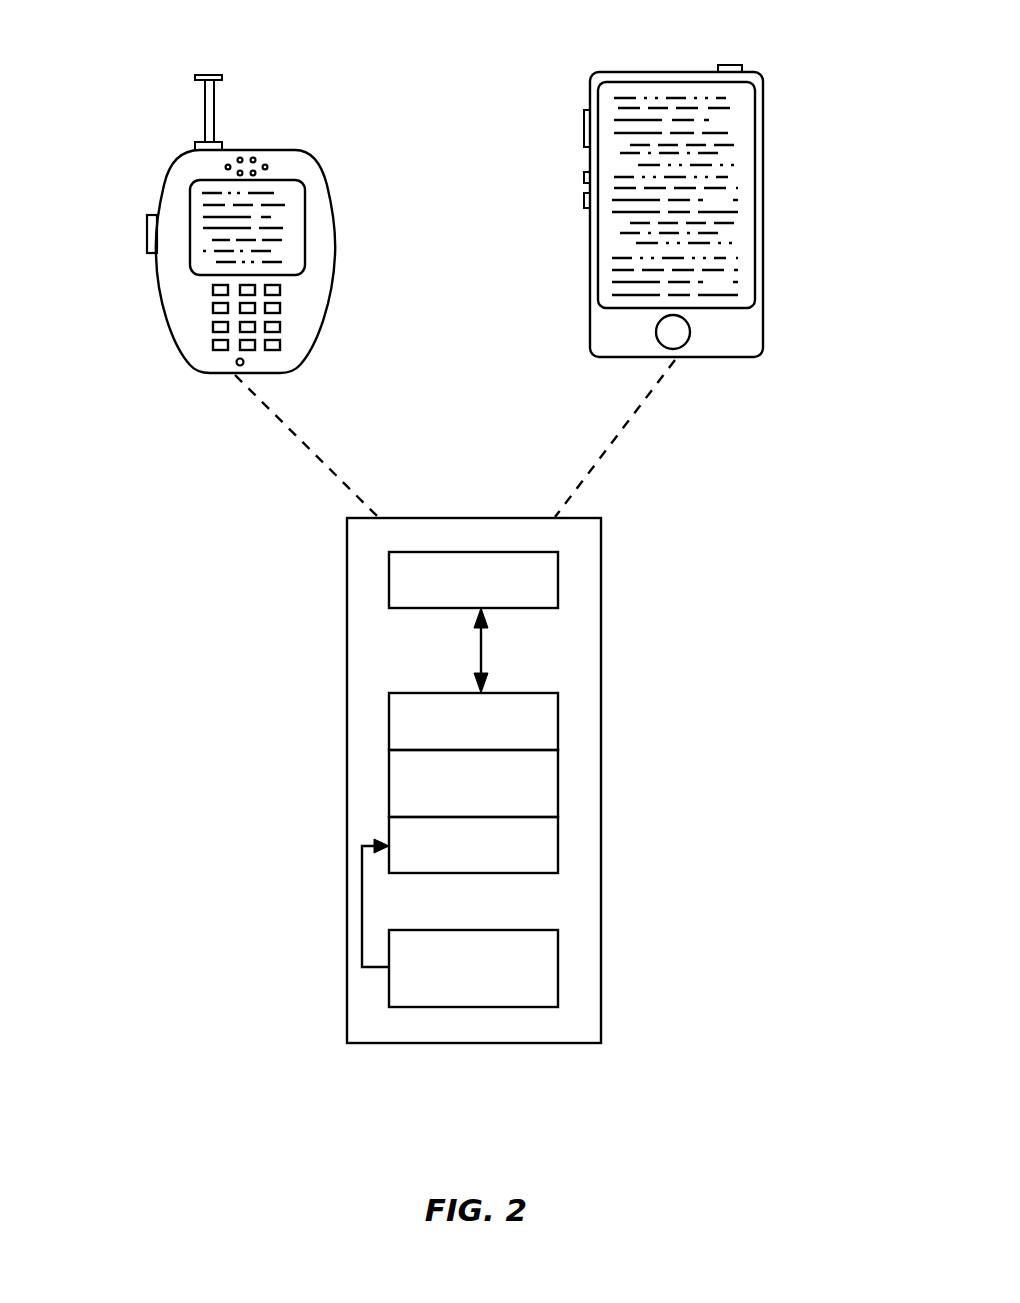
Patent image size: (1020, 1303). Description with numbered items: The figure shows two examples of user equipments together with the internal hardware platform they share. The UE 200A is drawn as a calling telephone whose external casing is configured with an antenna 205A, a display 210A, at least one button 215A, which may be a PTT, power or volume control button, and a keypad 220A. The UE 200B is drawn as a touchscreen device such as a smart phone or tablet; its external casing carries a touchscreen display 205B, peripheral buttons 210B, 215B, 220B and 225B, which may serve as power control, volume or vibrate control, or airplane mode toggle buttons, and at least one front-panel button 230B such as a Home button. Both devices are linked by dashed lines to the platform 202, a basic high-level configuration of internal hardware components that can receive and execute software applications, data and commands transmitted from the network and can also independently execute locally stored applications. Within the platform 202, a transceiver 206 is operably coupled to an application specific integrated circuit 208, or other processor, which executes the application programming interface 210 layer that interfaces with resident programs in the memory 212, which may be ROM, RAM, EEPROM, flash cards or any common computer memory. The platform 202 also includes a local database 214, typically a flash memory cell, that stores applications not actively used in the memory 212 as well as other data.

The UE 200A is at (307, 352).
The antenna 205A is at (214, 93).
The display 210A is at (305, 225).
The button 215A is at (148, 235).
The keypad 220A is at (280, 307).
The UE 200B is at (635, 70).
The touchscreen display 205B is at (757, 108).
The peripheral button 210B is at (727, 65).
The peripheral button 215B is at (583, 130).
The peripheral button 220B is at (583, 176).
The peripheral button 225B is at (583, 202).
The front-panel button 230B is at (655, 333).
The platform 202 is at (347, 625).
The transceiver 206 is at (558, 575).
The application specific integrated circuit 208 is at (558, 720).
The application programming interface 210 is at (558, 780).
The memory 212 is at (558, 843).
The local database 214 is at (558, 966).